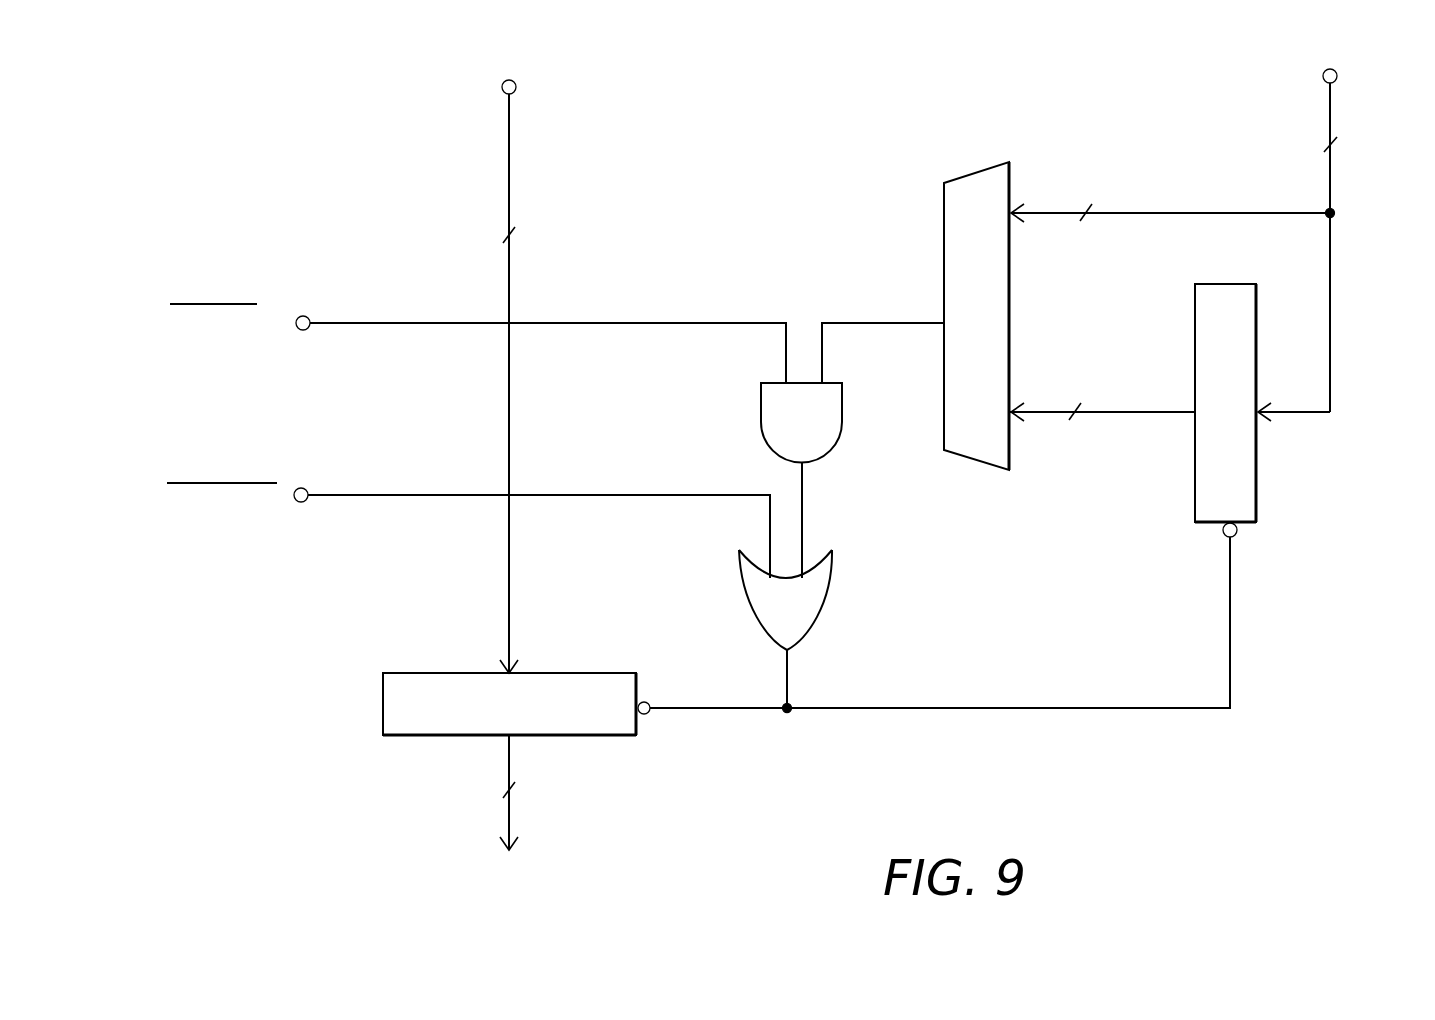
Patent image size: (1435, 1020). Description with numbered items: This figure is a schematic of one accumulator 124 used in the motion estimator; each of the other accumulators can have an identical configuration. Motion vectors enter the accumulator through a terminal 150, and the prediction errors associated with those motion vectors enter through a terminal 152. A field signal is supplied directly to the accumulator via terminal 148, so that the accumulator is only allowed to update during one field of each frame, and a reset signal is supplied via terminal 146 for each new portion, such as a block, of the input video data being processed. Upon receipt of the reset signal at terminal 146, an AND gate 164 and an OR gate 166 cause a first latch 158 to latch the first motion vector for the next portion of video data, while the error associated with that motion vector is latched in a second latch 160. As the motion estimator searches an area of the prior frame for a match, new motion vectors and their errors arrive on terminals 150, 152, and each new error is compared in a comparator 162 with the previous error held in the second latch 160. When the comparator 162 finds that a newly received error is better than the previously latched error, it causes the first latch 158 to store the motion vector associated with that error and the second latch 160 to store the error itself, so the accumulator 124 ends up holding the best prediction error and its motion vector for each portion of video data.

The accumulator 124 is at (779, 166).
The reset terminal 146 is at (303, 331).
The field signal terminal 148 is at (305, 503).
The motion vector input terminal 150 is at (516, 90).
The prediction error input terminal 152 is at (1337, 77).
The first latch 158 is at (596, 738).
The second latch 160 is at (1256, 490).
The comparator 162 is at (967, 458).
The AND gate 164 is at (761, 436).
The OR gate 166 is at (818, 628).